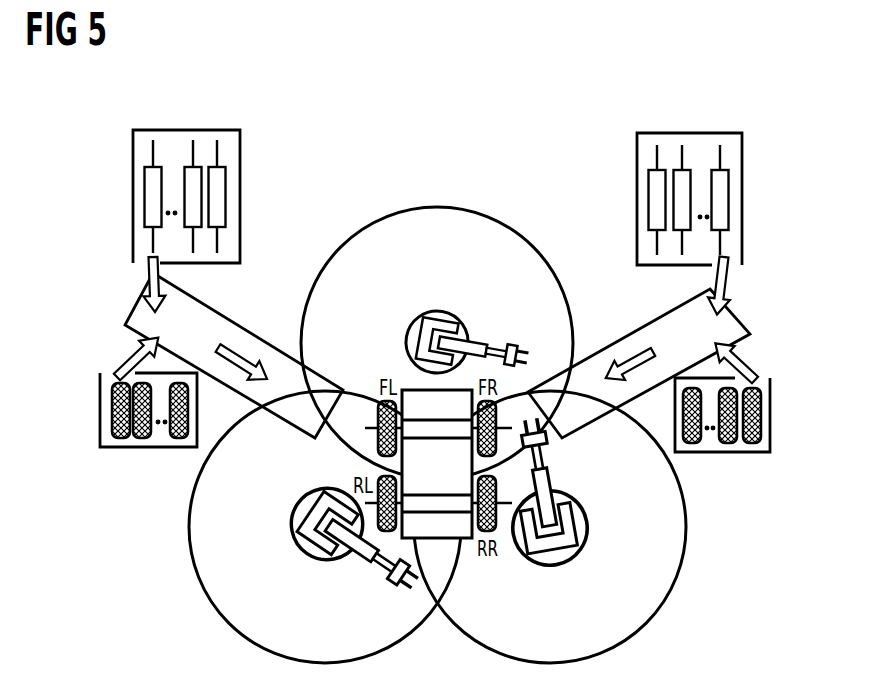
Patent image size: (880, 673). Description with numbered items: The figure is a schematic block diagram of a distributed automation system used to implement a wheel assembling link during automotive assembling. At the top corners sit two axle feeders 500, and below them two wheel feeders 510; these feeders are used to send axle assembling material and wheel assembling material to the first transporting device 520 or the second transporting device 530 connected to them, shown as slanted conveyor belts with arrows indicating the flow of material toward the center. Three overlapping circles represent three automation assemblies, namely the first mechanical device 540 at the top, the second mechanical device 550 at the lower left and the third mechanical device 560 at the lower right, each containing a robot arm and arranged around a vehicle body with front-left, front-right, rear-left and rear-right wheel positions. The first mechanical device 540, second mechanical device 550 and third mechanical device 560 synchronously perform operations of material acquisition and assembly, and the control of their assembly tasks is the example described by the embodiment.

The axle feeder 500 is at (187, 130).
The wheel feeder 510 is at (100, 414).
The first transporting device 520 is at (248, 332).
The second transporting device 530 is at (626, 332).
The first mechanical device 540 is at (437, 207).
The second mechanical device 550 is at (200, 582).
The third mechanical device 560 is at (673, 587).